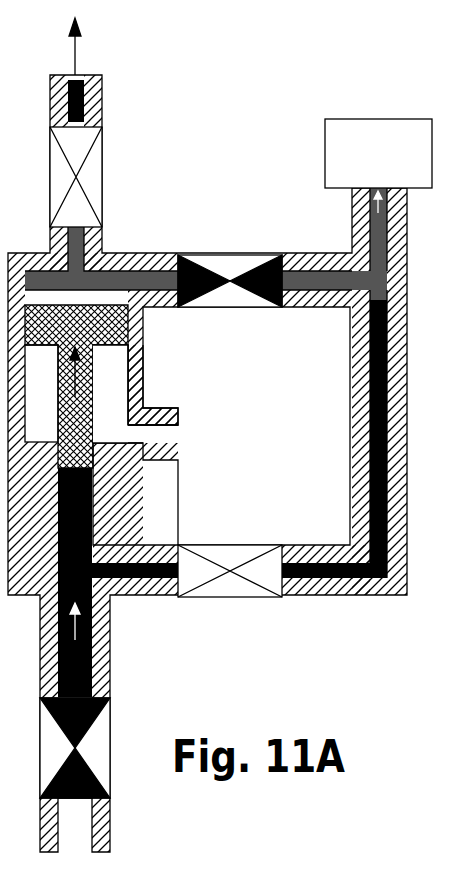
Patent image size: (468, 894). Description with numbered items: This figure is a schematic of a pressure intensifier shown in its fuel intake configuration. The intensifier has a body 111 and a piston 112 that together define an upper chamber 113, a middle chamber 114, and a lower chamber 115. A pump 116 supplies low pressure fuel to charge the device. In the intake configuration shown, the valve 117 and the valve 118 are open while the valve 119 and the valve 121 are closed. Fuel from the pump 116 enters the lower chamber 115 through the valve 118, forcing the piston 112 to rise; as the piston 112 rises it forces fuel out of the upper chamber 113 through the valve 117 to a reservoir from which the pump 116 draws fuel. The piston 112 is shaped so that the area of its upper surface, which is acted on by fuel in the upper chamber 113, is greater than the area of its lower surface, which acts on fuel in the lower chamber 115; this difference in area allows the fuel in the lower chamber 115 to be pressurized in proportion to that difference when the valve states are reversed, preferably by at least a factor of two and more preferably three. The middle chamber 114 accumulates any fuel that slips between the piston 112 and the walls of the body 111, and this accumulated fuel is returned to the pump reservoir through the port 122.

The body 111 is at (113, 508).
The piston 112 is at (95, 393).
The upper chamber 113 is at (78, 288).
The middle chamber 114 is at (110, 412).
The lower chamber 115 is at (76, 603).
The pump 116 is at (357, 130).
The valve 117 is at (92, 176).
The valve 118 is at (233, 553).
The valve 119 is at (228, 267).
The valve 121 is at (100, 745).
The port 122 is at (168, 432).